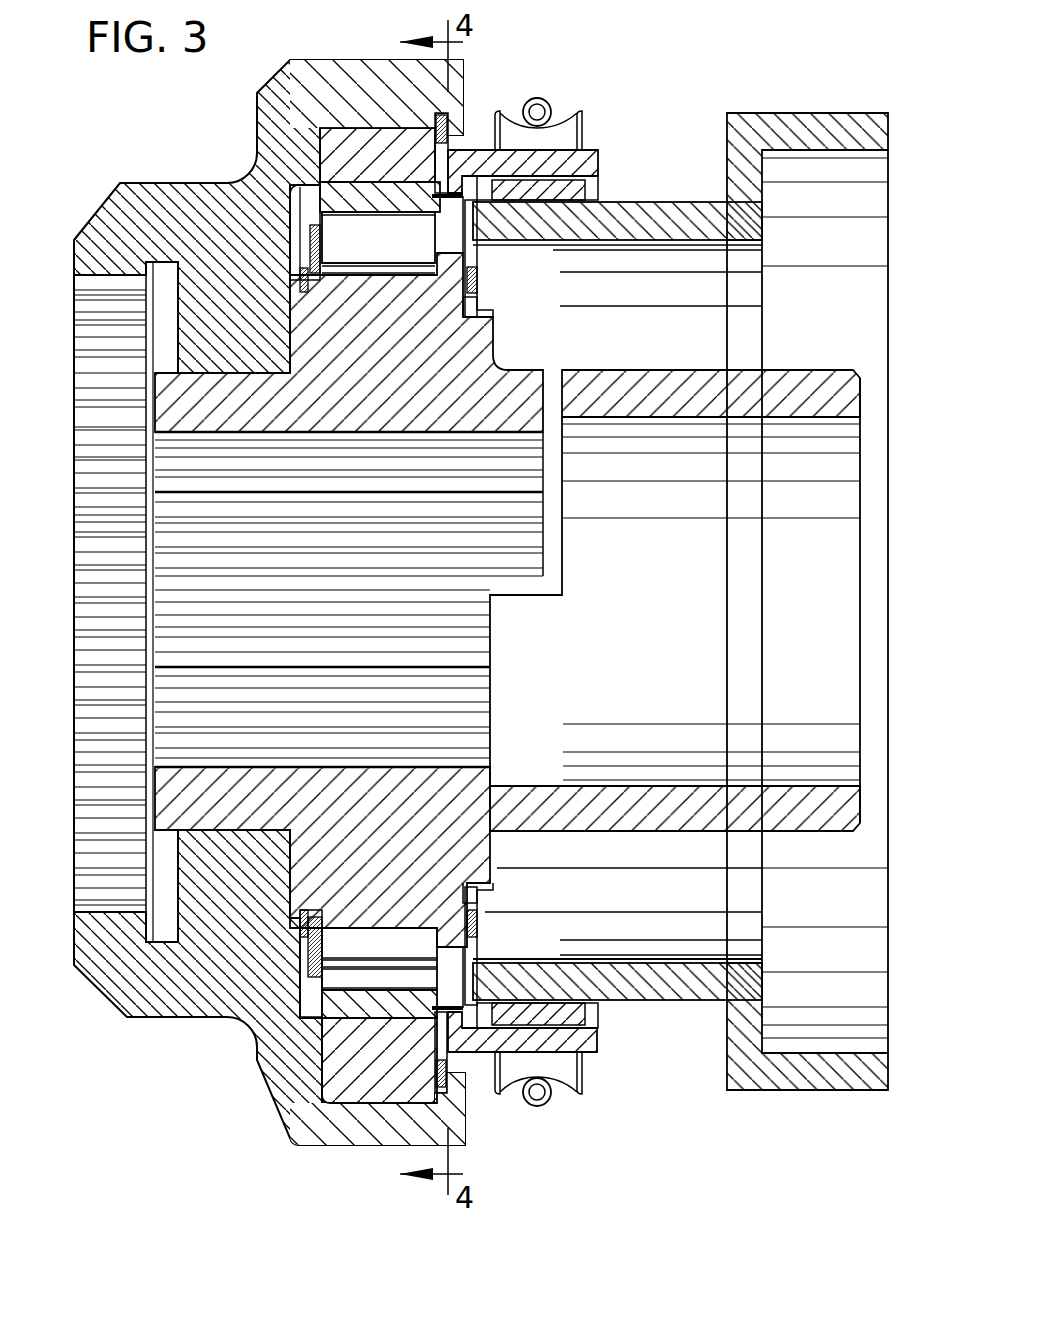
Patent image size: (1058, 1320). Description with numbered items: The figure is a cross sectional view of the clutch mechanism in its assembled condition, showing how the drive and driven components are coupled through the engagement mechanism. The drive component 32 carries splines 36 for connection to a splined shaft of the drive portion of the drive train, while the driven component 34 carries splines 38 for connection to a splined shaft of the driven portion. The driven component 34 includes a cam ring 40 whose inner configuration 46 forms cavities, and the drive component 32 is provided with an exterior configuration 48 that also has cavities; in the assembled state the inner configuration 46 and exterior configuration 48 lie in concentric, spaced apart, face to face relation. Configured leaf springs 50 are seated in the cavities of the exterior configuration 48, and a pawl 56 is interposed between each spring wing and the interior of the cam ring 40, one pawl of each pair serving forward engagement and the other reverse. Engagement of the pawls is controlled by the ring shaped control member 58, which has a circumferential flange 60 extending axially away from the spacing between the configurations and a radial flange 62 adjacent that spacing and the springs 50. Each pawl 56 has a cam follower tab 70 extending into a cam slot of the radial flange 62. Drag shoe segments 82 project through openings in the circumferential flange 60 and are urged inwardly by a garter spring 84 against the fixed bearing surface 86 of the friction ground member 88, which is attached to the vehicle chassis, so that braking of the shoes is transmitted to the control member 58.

The drive component 32 is at (556, 367).
The driven component 34 is at (95, 207).
The splines 36 is at (478, 660).
The splines 38 is at (83, 315).
The cam ring 40 is at (373, 150).
The inner configuration 46 is at (416, 200).
The exterior configuration 48 is at (443, 262).
The leaf spring 50 is at (338, 240).
The pawl 56 is at (343, 197).
The control member 58 is at (608, 144).
The circumferential flange 60 is at (522, 157).
The radial flange 62 is at (455, 305).
The cam follower tab 70 is at (457, 215).
The drag shoe segment 82 is at (558, 135).
The garter spring 84 is at (547, 100).
The bearing surface 86 is at (668, 200).
The friction ground member 88 is at (798, 112).